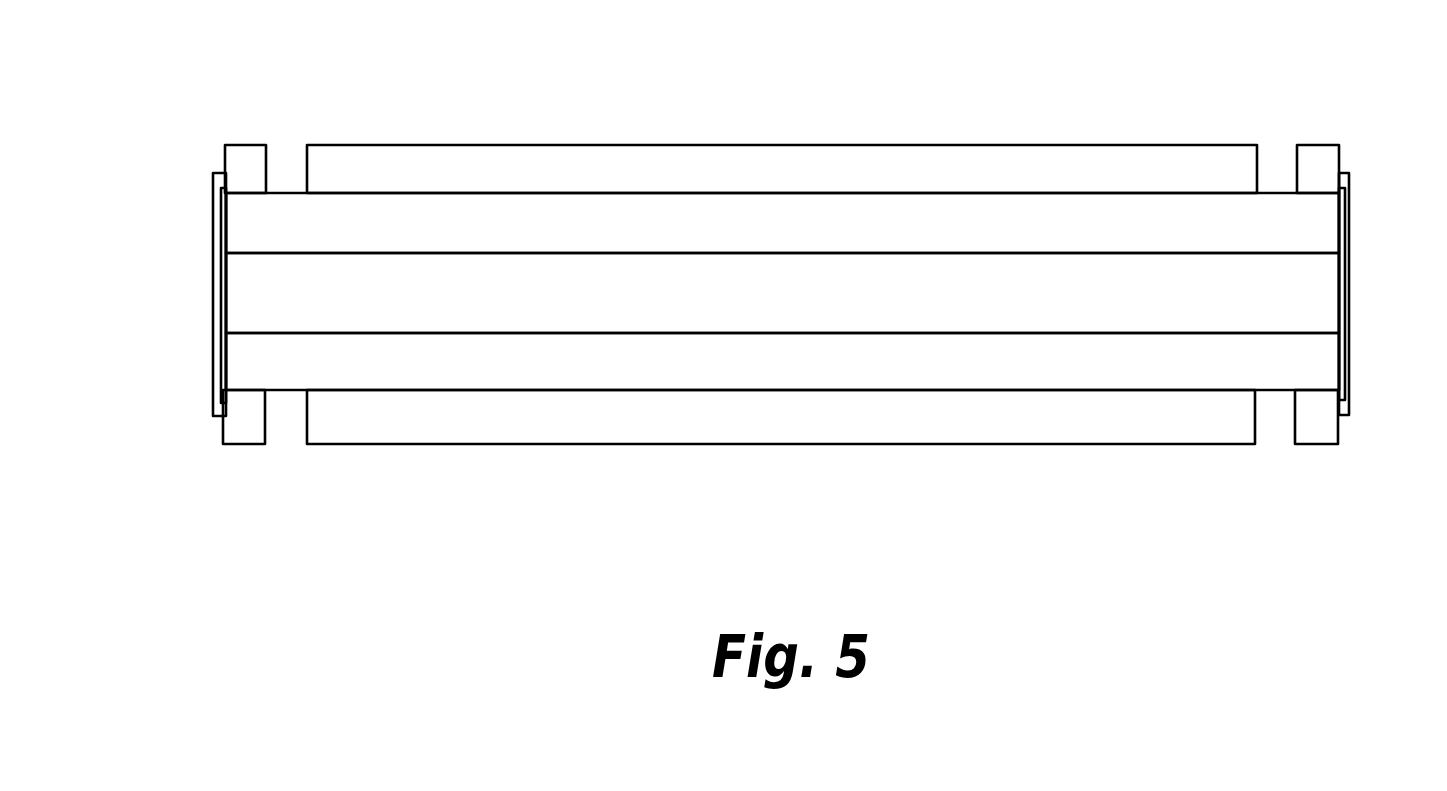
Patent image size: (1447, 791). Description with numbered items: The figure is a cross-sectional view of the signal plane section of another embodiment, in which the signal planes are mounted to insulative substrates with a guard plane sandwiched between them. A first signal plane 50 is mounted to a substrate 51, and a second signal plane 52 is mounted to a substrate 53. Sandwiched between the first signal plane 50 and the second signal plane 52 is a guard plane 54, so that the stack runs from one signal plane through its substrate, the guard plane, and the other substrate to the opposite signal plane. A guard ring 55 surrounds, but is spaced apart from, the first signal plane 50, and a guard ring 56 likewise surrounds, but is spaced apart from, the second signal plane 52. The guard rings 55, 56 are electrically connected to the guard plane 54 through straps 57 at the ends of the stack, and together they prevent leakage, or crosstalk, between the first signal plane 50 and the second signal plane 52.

The first signal plane 50 is at (560, 444).
The substrate 51 is at (833, 375).
The second signal plane 52 is at (1151, 145).
The substrate 53 is at (722, 222).
The guard plane 54 is at (878, 308).
The guard ring 55 is at (242, 444).
The guard ring 56 is at (252, 145).
The straps 57 is at (213, 285).